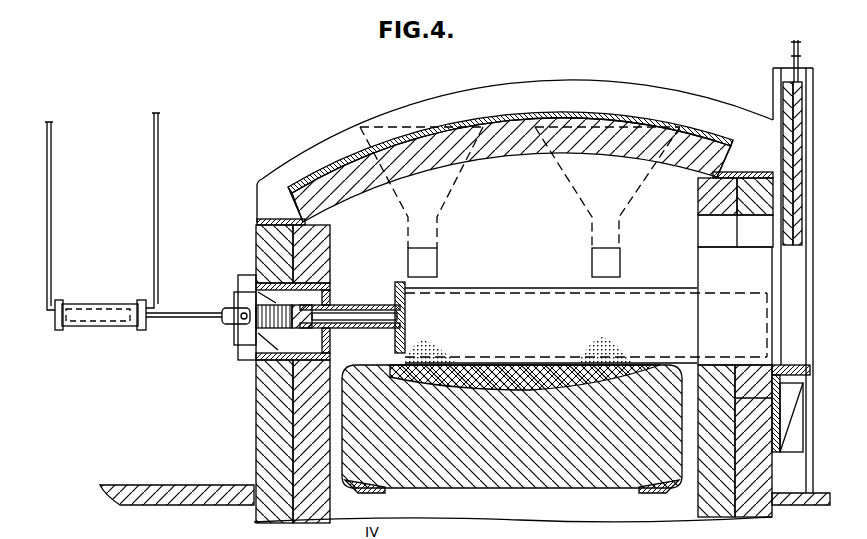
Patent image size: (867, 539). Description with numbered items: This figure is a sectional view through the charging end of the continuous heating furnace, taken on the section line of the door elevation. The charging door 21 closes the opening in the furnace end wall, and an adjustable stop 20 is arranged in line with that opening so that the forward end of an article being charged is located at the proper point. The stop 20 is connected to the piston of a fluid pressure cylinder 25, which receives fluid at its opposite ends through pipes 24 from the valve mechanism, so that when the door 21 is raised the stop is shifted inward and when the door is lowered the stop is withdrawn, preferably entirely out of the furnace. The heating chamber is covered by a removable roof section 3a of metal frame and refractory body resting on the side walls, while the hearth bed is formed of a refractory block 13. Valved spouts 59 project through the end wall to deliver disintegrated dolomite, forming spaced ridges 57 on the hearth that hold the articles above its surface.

The roof section 3a is at (570, 122).
The refractory block 13 is at (362, 428).
The adjustable stop 20 is at (352, 308).
The door 21 is at (783, 102).
The pipes 24 is at (52, 190).
The fluid pressure cylinder 25 is at (113, 298).
The spaced ridges 57 is at (441, 348).
The valved spouts 59 is at (437, 266).